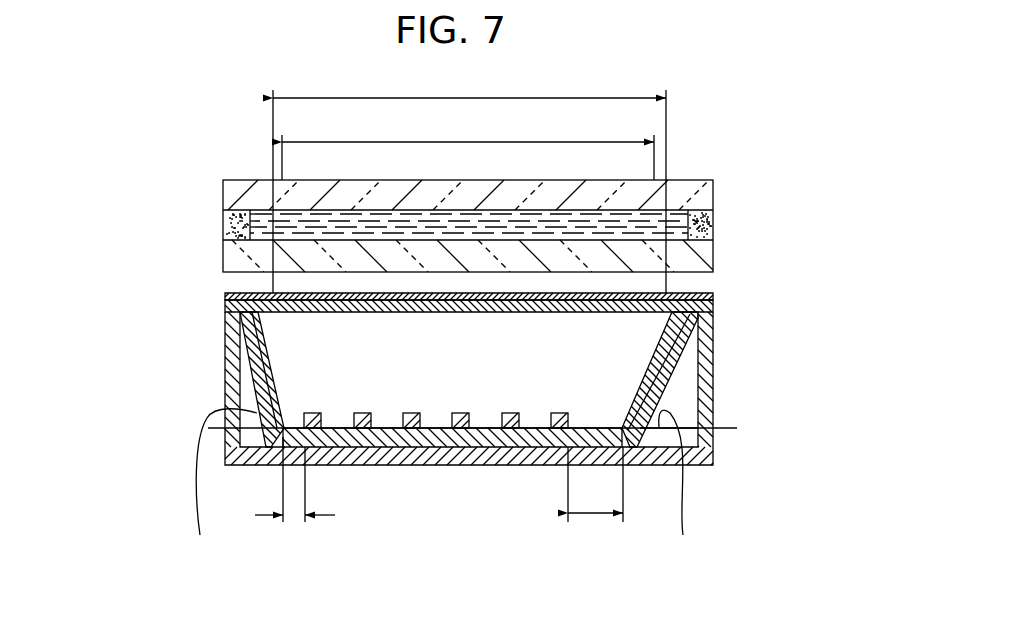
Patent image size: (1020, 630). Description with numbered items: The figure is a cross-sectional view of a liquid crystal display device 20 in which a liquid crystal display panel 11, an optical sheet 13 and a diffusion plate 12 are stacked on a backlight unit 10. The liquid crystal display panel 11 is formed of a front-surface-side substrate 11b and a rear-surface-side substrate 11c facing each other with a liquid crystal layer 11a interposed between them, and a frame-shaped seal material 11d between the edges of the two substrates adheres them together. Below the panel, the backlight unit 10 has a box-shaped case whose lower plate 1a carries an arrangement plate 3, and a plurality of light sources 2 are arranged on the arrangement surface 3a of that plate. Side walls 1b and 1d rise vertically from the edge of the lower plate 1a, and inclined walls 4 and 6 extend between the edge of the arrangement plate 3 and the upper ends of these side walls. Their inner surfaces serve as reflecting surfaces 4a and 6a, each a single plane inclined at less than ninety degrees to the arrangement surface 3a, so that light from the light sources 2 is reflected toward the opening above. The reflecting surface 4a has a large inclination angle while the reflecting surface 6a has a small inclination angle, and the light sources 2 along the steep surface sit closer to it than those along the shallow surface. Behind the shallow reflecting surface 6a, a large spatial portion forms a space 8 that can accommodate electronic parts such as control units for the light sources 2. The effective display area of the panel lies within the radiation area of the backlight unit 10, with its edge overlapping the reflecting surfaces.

The liquid crystal display device 20 is at (186, 176).
The liquid crystal display panel 11 is at (533, 197).
The liquid crystal layer 11a is at (672, 225).
The front-surface-side substrate 11b is at (688, 200).
The rear-surface-side substrate 11c is at (692, 257).
The seal material 11d is at (710, 225).
The optical sheet 13 is at (712, 294).
The diffusion plate 12 is at (706, 306).
The backlight unit 10 is at (455, 419).
The lower plate 1a is at (440, 456).
The side wall 1b is at (231, 330).
The side wall 1d is at (706, 376).
The light source 2 is at (362, 412).
The arrangement plate 3 is at (376, 440).
The arrangement surface 3a is at (491, 436).
The inclined wall 4 is at (211, 379).
The reflecting surface 4a is at (276, 366).
The inclined wall 6 is at (699, 373).
The reflecting surface 6a is at (681, 352).
The space 8 is at (683, 397).